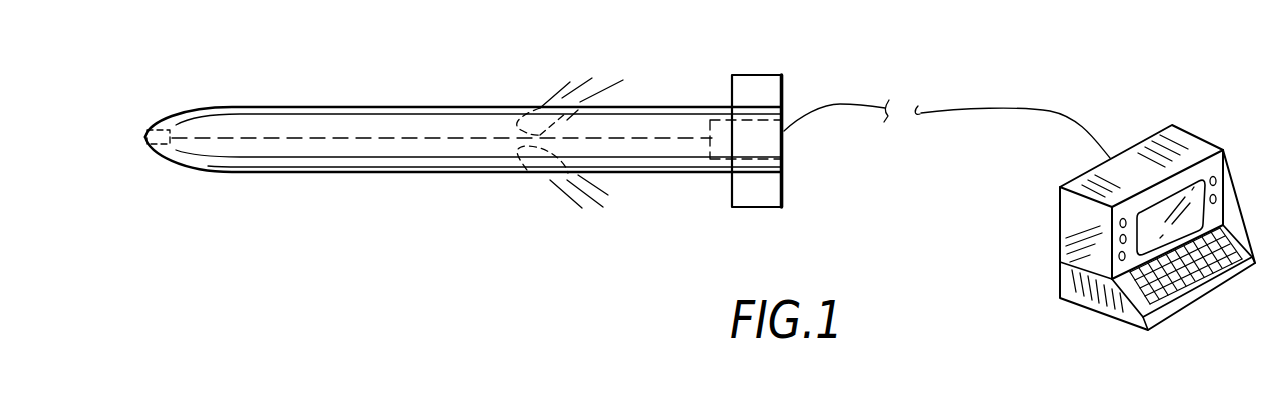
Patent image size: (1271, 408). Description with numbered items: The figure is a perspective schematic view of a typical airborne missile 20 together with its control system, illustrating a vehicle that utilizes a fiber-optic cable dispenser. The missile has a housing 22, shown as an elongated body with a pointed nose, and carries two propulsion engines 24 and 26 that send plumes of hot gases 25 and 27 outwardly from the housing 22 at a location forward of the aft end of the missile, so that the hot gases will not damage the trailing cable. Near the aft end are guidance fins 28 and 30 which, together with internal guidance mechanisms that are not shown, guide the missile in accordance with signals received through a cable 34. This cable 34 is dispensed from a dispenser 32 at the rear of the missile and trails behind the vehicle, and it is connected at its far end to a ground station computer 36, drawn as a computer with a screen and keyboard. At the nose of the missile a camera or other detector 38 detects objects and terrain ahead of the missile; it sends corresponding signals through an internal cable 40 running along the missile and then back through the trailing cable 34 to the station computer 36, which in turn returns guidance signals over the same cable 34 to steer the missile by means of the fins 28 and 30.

The airborne missile 20 is at (138, 184).
The housing 22 is at (350, 173).
The propulsion engine 24 is at (539, 108).
The plume of hot gases 25 is at (592, 78).
The propulsion engine 26 is at (527, 170).
The plume of hot gases 27 is at (608, 195).
The guidance fin 28 is at (757, 75).
The guidance fin 30 is at (770, 207).
The dispenser 32 is at (784, 145).
The cable 34 is at (848, 105).
The ground station computer 36 is at (1199, 123).
The camera or other detector 38 is at (145, 137).
The cable 40 is at (482, 138).